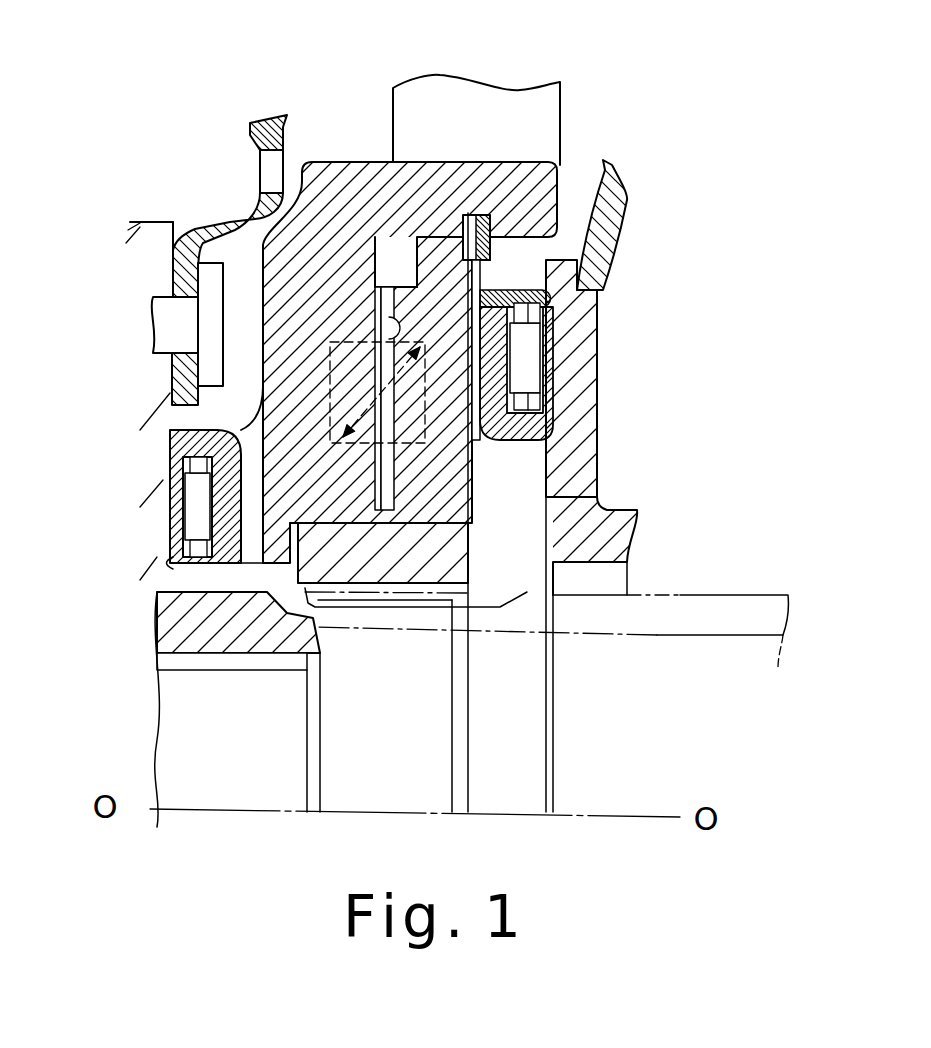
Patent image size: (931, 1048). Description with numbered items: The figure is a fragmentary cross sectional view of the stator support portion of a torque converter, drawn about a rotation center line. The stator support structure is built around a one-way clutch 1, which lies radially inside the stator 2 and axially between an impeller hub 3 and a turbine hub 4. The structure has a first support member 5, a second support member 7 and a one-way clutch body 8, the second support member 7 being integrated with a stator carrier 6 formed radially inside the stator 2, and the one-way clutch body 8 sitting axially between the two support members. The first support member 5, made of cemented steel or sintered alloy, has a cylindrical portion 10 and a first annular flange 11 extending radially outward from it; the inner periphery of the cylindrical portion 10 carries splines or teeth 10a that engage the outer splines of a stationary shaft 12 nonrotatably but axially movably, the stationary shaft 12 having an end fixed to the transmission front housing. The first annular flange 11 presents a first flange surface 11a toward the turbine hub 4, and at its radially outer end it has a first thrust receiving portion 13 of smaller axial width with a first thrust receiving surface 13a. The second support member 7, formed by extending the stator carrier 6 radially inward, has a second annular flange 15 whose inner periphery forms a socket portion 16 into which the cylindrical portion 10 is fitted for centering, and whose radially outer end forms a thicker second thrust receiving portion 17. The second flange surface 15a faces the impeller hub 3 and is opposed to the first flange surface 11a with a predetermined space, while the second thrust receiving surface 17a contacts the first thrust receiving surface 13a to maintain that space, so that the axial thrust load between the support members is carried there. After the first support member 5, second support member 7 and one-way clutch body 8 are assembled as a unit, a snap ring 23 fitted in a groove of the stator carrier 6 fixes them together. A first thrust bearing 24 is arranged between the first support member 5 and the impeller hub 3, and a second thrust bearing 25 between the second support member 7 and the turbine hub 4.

The one-way clutch 1 is at (246, 247).
The stator 2 is at (537, 107).
The impeller hub 3 is at (587, 315).
The turbine hub 4 is at (145, 247).
The first support member 5 is at (473, 507).
The stator carrier 6 is at (497, 234).
The second support member 7 is at (261, 366).
The one-way clutch body 8 is at (485, 413).
The cylindrical portion 10 is at (440, 565).
The splines or teeth 10a is at (413, 597).
The first annular flange 11 is at (443, 478).
The first flange surface 11a is at (342, 526).
The stationary shaft 12 is at (753, 603).
The first thrust receiving portion 13 is at (453, 272).
The first thrust receiving surface 13a is at (390, 280).
The second annular flange 15 is at (287, 308).
The second flange surface 15a is at (343, 343).
The socket portion 16 is at (280, 588).
The second thrust receiving portion 17 is at (413, 282).
The second thrust receiving surface 17a is at (462, 235).
The snap ring 23 is at (567, 212).
The first thrust bearing 24 is at (527, 368).
The second thrust bearing 25 is at (193, 508).